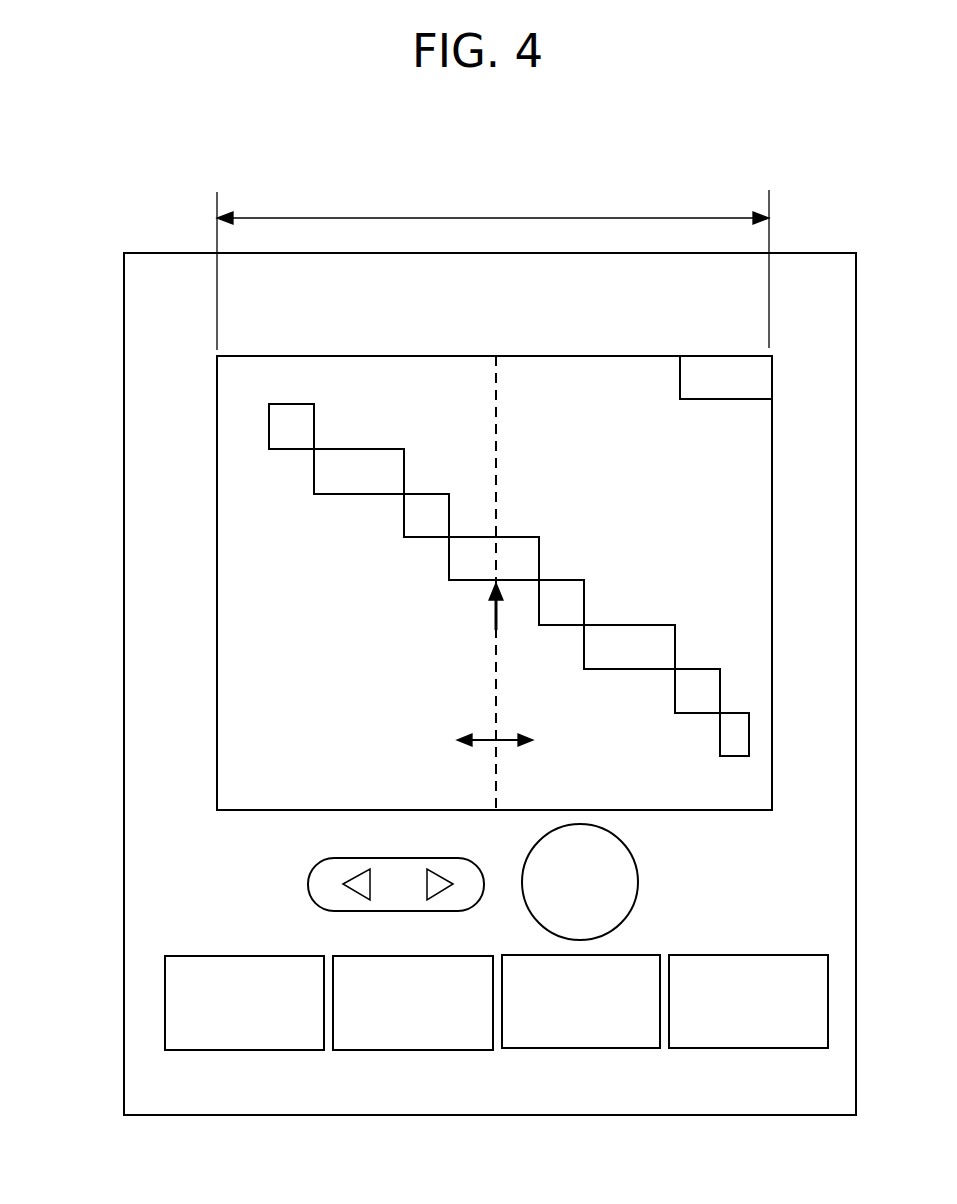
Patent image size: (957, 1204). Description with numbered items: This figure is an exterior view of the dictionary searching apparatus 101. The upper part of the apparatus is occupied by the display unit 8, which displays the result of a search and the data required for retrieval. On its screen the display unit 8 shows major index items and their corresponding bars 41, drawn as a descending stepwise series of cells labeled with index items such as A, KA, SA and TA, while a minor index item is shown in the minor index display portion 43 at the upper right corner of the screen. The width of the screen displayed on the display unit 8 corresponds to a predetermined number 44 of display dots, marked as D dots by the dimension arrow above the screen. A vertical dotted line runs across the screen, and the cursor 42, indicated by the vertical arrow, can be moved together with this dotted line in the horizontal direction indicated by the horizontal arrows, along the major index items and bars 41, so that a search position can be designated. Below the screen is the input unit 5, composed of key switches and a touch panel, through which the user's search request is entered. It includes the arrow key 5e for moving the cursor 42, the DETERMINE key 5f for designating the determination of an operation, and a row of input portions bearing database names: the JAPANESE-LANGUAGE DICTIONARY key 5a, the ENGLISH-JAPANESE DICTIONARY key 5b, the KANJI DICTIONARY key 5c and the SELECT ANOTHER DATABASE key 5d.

The dictionary searching apparatus 101 is at (125, 568).
The display unit 8 is at (773, 608).
The predetermined number of display dots 44 is at (503, 185).
The minor index display portion 43 is at (738, 377).
The major index items and corresponding bars 41 is at (259, 413).
The cursor 42 is at (494, 688).
The input unit 5 is at (778, 892).
The JAPANESE-LANGUAGE DICTIONARY key 5a is at (250, 1050).
The ENGLISH-JAPANESE DICTIONARY key 5b is at (413, 1050).
The KANJI DICTIONARY key 5c is at (577, 1048).
The SELECT ANOTHER DATABASE key 5d is at (748, 1048).
The arrow key 5e is at (308, 880).
The DETERMINE key 5f is at (639, 882).